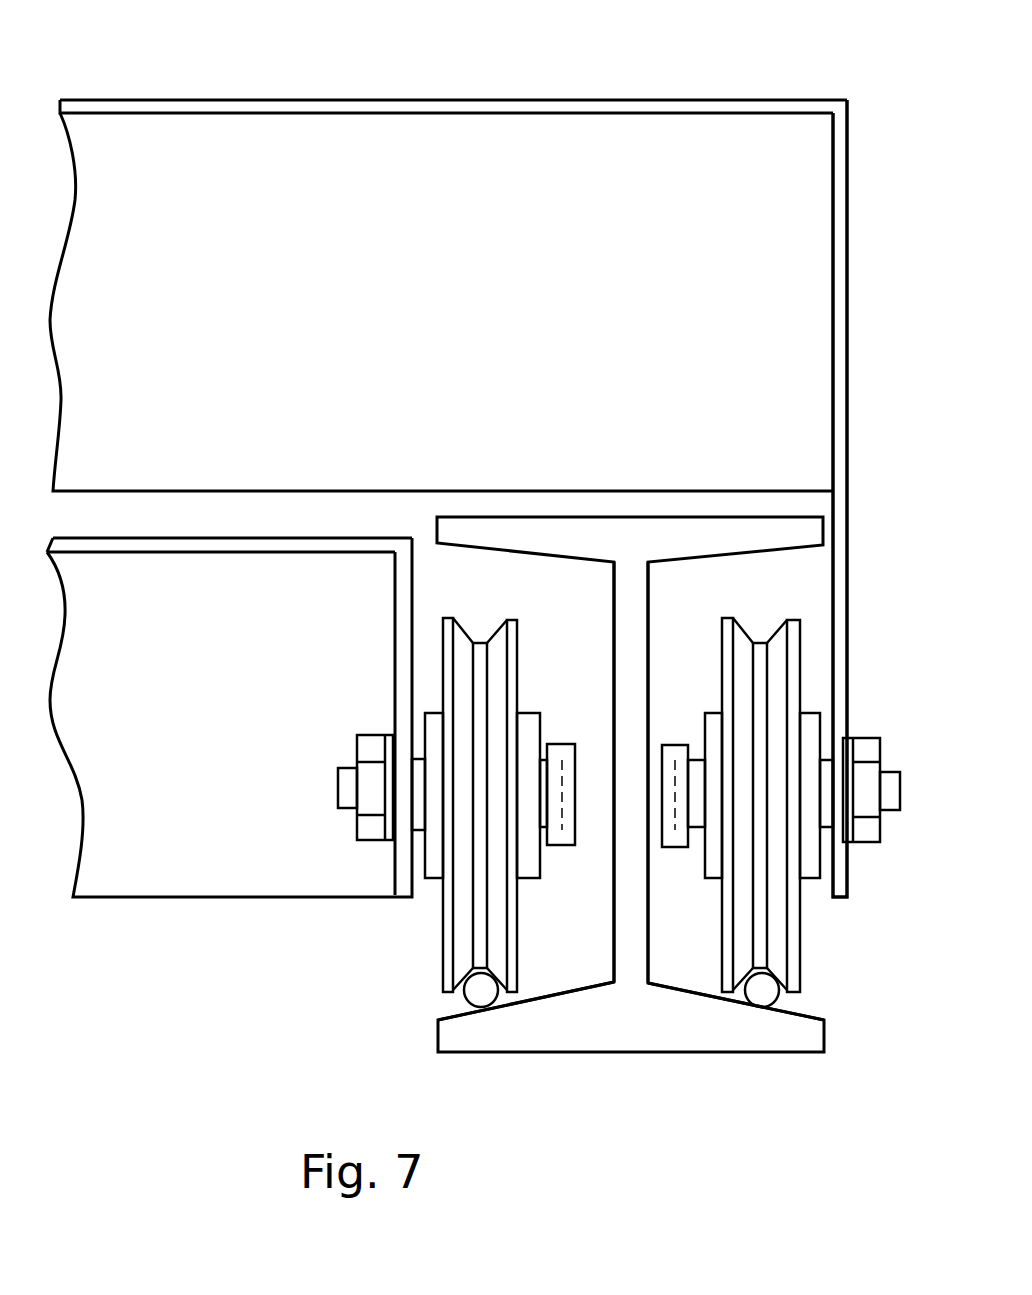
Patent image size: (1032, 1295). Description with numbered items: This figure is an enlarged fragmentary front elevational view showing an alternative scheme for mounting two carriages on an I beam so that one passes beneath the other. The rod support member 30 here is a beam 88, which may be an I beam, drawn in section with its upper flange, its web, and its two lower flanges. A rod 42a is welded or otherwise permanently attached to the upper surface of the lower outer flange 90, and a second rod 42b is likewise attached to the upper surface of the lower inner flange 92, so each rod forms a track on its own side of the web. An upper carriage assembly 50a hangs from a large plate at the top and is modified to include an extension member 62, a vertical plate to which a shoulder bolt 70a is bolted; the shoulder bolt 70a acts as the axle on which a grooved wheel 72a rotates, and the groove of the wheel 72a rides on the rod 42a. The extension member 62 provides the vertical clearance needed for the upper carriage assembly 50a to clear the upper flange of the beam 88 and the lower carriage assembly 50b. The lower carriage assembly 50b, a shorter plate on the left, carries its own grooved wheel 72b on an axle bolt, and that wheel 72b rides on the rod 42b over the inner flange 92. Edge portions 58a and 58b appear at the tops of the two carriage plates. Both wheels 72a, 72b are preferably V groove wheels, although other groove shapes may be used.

The rod support member 30 is at (687, 1052).
The rod 42a is at (782, 995).
The rod 42b is at (473, 990).
The upper carriage assembly 50a is at (523, 88).
The lower carriage assembly 50b is at (197, 912).
The panel top edge 58a is at (205, 103).
The panel top edge 58b is at (178, 543).
The extension member 62 is at (848, 620).
The shoulder bolt 70a is at (677, 848).
The grooved wheel 72a is at (780, 935).
The grooved wheel 72b is at (463, 917).
The beam 88 is at (617, 615).
The lower outer flange 90 is at (690, 986).
The lower inner flange 92 is at (552, 983).